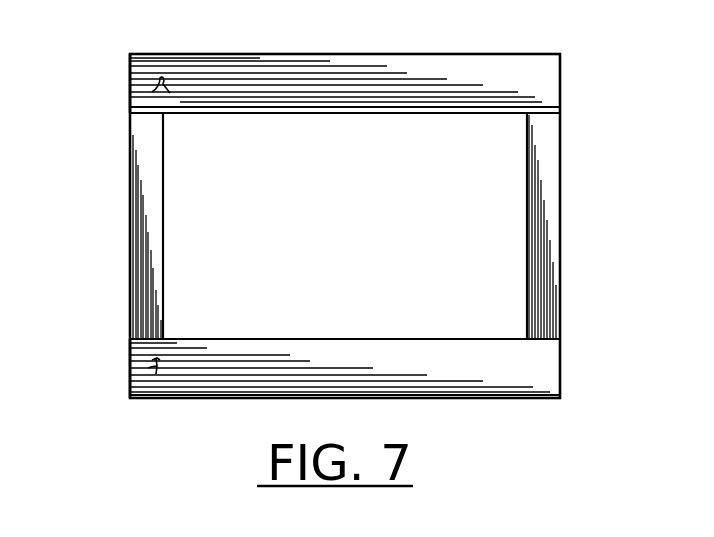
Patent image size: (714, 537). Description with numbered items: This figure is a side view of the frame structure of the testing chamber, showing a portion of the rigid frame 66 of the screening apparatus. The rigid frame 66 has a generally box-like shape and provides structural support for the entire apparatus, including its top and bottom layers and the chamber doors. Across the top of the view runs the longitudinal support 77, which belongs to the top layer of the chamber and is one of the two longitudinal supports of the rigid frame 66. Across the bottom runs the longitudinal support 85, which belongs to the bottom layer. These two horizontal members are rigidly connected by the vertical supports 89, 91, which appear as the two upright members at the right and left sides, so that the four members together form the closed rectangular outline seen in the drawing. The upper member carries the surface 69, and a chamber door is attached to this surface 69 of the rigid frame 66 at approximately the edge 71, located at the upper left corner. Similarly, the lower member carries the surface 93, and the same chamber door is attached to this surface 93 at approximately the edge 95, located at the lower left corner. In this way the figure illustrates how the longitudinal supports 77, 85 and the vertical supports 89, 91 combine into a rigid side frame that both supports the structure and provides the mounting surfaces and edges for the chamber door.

The rigid frame 66 is at (391, 50).
The longitudinal support 77 is at (200, 54).
The edge 71 is at (128, 54).
The surface 69 is at (152, 92).
The vertical support 91 is at (163, 246).
The vertical support 89 is at (560, 247).
The edge 95 is at (130, 354).
The surface 93 is at (148, 368).
The longitudinal support 85 is at (195, 398).